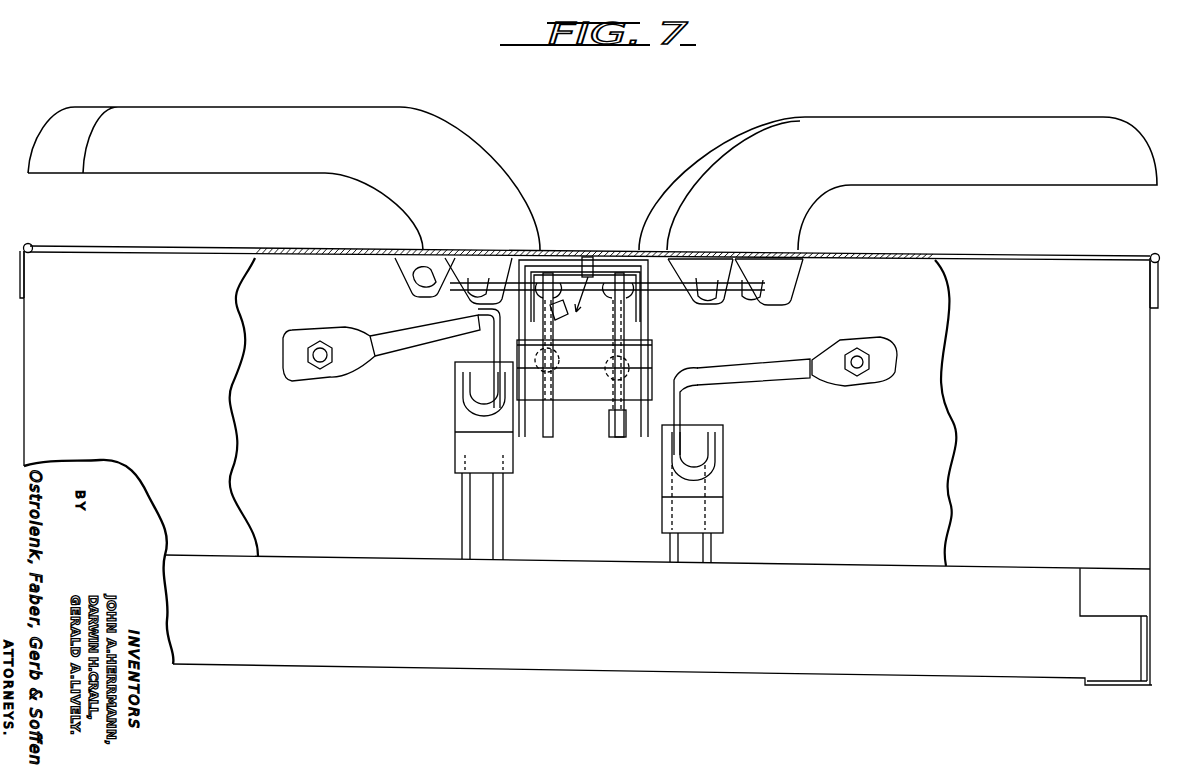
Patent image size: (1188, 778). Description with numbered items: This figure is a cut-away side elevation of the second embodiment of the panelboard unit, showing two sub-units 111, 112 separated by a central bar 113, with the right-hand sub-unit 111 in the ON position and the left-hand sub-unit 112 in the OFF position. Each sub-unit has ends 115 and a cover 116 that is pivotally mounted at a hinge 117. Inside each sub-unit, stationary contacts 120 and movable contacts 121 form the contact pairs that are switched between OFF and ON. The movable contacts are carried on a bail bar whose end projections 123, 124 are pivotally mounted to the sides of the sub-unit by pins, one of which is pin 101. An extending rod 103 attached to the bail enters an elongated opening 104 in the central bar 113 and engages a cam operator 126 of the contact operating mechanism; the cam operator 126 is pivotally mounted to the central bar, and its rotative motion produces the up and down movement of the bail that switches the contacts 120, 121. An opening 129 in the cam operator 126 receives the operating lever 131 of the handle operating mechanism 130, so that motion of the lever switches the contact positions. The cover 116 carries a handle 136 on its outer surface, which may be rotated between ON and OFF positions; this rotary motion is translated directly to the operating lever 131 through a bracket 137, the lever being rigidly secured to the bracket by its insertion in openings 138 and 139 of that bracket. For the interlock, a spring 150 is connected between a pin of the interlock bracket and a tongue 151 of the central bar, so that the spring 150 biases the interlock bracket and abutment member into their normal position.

The pin 101 is at (854, 365).
The elongated opening 104 is at (854, 365).
The extending rod 103 is at (517, 329).
The sub-unit 111 is at (825, 464).
The sub-unit 112 is at (327, 428).
The central bar 113 is at (592, 258).
The ends 115 is at (24, 418).
The cover 116 is at (307, 250).
The hinge 117 is at (27, 245).
The stationary contacts 120 is at (464, 506).
The movable contacts 121 is at (464, 422).
The end projection 123 is at (854, 365).
The end projection 124 is at (858, 356).
The cam operator 126 is at (614, 312).
The opening 129 is at (549, 352).
The handle operating mechanism 130 is at (811, 277).
The operating lever 131 is at (661, 290).
The handle 136 is at (365, 118).
The bracket 137 is at (400, 260).
The opening 138 is at (470, 300).
The opening 139 is at (424, 280).
The spring 150 is at (577, 302).
The central bar tongue 151 is at (583, 257).